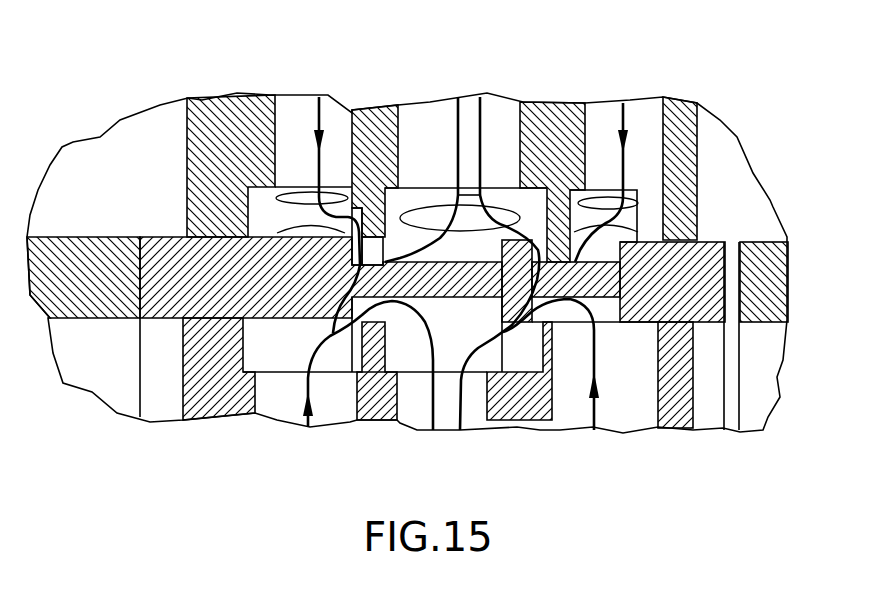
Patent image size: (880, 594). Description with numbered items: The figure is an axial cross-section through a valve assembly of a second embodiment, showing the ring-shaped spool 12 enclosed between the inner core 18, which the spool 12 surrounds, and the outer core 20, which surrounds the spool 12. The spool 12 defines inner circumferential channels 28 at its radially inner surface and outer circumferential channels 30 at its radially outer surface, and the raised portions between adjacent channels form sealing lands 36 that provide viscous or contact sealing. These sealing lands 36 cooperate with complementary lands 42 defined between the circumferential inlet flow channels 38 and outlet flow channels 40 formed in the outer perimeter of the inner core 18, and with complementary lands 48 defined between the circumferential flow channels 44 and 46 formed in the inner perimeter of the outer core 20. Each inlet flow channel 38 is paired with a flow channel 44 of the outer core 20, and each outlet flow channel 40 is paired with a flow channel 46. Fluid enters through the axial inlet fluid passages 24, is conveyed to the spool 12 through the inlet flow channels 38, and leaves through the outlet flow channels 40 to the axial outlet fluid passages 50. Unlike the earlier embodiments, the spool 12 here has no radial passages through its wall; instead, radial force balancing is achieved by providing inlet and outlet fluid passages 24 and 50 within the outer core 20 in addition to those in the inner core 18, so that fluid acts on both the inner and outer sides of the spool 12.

The spool 12 is at (165, 237).
The inner core 18 is at (675, 413).
The outer core 20 is at (683, 155).
The axial inlet fluid passage 24 is at (295, 102).
The inner circumferential channel 28 is at (392, 307).
The outer circumferential channel 30 is at (473, 262).
The sealing land 36 is at (352, 258).
The inlet flow channel 38 is at (250, 345).
The outlet flow channel 40 is at (427, 367).
The complementary land 42 is at (375, 325).
The circumferential flow channel 44 is at (262, 193).
The circumferential flow channel 46 is at (417, 203).
The complementary land 48 is at (372, 203).
The axial outlet fluid passage 50 is at (498, 110).